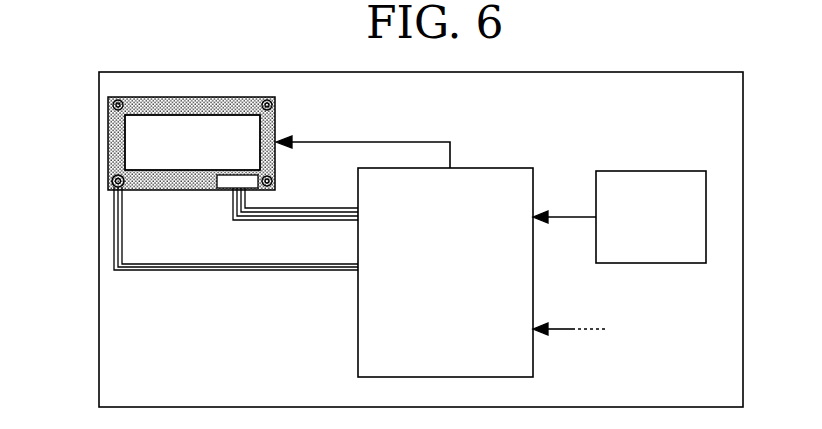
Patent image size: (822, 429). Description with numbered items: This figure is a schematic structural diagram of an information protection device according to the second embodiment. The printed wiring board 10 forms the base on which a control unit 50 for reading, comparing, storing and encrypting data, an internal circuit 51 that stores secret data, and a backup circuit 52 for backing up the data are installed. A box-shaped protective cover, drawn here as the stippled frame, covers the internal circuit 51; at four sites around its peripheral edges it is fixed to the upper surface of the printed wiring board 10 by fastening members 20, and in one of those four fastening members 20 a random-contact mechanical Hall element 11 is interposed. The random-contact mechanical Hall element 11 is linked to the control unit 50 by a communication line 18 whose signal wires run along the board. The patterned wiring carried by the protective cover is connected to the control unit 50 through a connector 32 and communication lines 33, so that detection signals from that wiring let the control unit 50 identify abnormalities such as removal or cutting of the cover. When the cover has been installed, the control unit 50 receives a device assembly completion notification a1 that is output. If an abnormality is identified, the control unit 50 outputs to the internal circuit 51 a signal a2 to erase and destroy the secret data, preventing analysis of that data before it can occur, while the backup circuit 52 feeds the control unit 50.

The printed wiring board 10 is at (743, 118).
The random-contact mechanical Hall element 11 is at (110, 182).
The communication line 18 is at (205, 270).
The fastening member 20 is at (118, 100).
The connector 32 is at (222, 190).
The communication lines 33 is at (300, 220).
The control unit 50 is at (488, 168).
The internal circuit 51 is at (197, 140).
The backup circuit 52 is at (640, 171).
The device assembly completion notification a1 is at (566, 331).
The data erase and destroy signal a2 is at (400, 142).